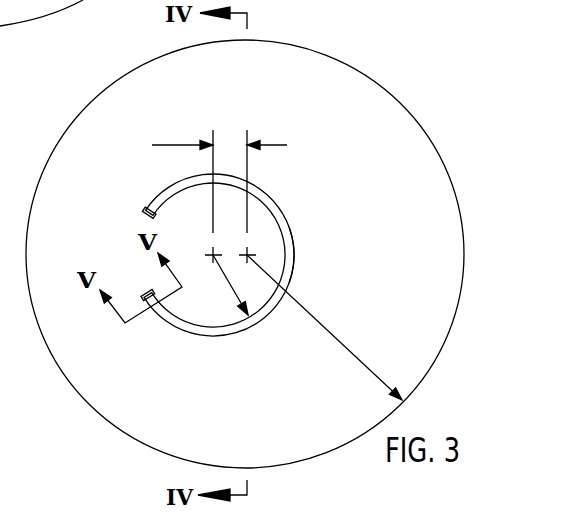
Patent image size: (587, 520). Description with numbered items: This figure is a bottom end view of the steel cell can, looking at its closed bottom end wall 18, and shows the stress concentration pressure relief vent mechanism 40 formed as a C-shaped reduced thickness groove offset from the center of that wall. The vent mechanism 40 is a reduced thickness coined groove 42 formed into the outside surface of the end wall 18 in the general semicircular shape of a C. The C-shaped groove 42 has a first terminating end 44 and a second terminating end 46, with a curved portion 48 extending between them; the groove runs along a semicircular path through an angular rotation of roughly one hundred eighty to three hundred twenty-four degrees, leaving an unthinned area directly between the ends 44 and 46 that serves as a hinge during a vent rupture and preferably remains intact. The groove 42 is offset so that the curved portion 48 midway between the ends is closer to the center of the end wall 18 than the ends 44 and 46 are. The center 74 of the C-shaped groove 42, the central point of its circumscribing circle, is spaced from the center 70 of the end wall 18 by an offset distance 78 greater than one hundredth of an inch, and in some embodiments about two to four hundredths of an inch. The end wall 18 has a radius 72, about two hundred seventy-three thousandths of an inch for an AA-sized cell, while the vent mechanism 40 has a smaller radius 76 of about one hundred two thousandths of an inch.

The closed bottom end wall 18 is at (452, 252).
The pressure relief vent mechanism 40 is at (140, 193).
The C-shaped groove 42 is at (262, 190).
The first terminating end 44 is at (144, 218).
The second terminating end 46 is at (145, 291).
The curved portion 48 is at (295, 250).
The center of the end wall 70 is at (250, 253).
The radius of the end wall 72 is at (333, 332).
The center of the C-shaped groove 74 is at (212, 258).
The radius of the vent mechanism 76 is at (230, 278).
The offset distance 78 is at (287, 144).